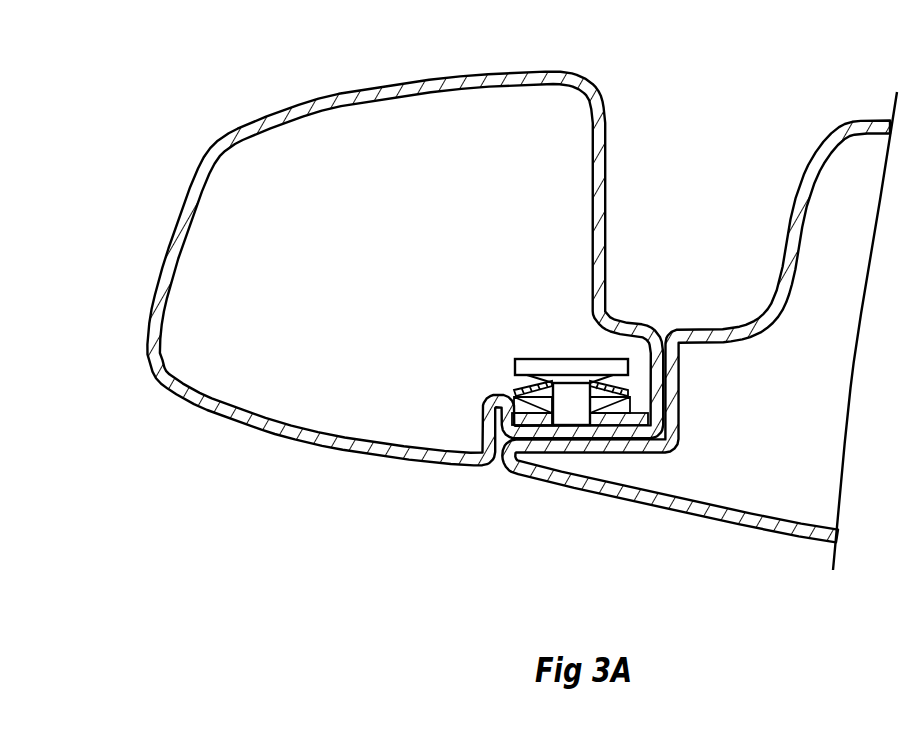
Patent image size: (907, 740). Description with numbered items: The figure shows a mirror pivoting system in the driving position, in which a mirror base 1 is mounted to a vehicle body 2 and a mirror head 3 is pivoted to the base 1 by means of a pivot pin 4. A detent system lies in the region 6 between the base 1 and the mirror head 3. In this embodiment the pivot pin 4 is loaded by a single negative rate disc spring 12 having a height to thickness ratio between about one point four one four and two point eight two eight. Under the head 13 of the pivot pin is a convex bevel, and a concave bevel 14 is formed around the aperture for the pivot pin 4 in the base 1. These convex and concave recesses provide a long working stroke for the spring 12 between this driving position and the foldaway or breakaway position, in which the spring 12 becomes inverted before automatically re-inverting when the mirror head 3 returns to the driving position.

The mirror base 1 is at (792, 227).
The vehicle body 2 is at (890, 368).
The mirror head 3 is at (252, 130).
The pivot pin 4 is at (568, 387).
The region 6 is at (613, 422).
The negative rate disc spring 12 is at (518, 387).
The head 13 is at (515, 362).
The concave bevel 14 is at (532, 400).